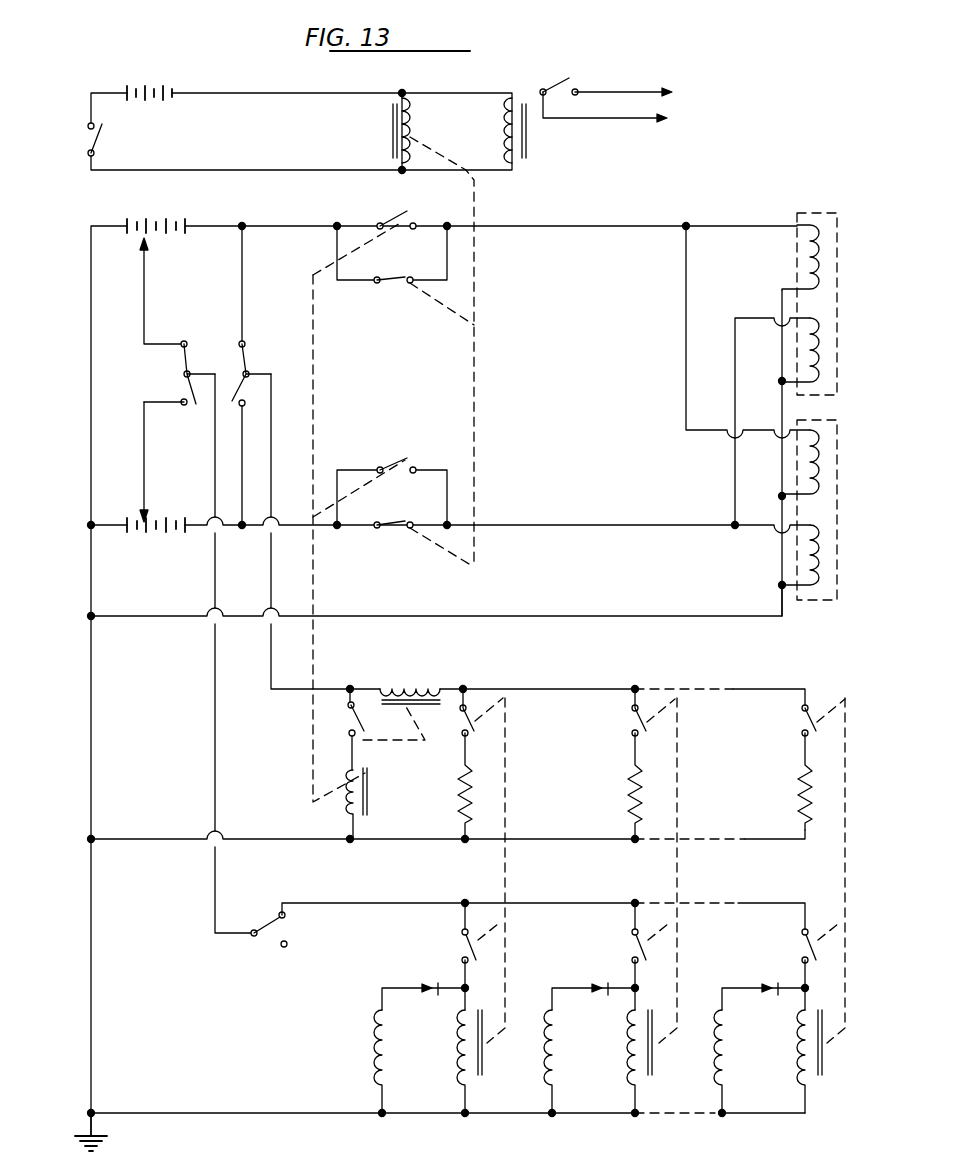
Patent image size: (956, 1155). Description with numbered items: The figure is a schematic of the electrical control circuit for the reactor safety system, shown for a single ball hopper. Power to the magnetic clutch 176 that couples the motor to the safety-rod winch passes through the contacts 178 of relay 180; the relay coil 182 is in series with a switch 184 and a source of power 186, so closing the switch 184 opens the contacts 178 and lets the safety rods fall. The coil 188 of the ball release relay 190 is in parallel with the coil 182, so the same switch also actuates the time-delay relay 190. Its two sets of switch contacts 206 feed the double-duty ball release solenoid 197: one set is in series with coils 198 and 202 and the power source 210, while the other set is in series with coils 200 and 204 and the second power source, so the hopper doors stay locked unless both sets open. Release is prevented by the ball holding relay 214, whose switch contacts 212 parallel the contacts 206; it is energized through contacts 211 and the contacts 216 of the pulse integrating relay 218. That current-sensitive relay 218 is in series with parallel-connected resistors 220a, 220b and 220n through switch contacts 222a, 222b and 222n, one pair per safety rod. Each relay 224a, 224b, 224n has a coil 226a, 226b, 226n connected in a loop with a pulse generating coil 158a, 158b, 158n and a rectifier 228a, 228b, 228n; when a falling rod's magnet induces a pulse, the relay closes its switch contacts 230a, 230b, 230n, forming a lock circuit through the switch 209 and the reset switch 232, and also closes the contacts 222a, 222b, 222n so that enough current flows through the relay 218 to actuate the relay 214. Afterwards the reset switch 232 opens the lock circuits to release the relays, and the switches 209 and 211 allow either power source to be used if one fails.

The source of power 186 is at (148, 92).
The switch 184 is at (84, 141).
The coil of ball release relay 188 is at (410, 137).
The ball release relay 190 is at (391, 128).
The relay coil 182 is at (506, 130).
The relay 180 is at (530, 141).
The contacts 178 is at (575, 92).
The magnetic clutch 176 is at (687, 108).
The power source 210 is at (150, 226).
The switch 209 is at (212, 340).
The contacts 211 is at (247, 350).
The switch contacts 212 is at (382, 230).
The switch contacts 206 is at (394, 286).
The ball release solenoid 197 is at (830, 424).
The coil 198 is at (828, 252).
The coil 200 is at (830, 340).
The coil 202 is at (832, 448).
The coil 204 is at (832, 544).
The pulse integrating relay 218 is at (428, 691).
The contacts 216 is at (348, 720).
The ball holding relay 214 is at (369, 788).
The switch contacts 222a is at (483, 730).
The resistor 220a is at (456, 798).
The switch contacts 222b is at (622, 720).
The resistor 220b is at (628, 774).
The switch contacts 222n is at (800, 722).
The resistor 220n is at (798, 794).
The reset switch 232 is at (276, 932).
The switch contacts 230a is at (460, 952).
The rectifier 228a is at (436, 980).
The coil 226a is at (462, 1035).
The relay 224a is at (458, 1060).
The pulse generating coil 158a is at (376, 1066).
The switch contacts 230b is at (630, 952).
The rectifier 228b is at (606, 980).
The coil 226b is at (632, 1035).
The relay 224b is at (628, 1060).
The pulse generating coil 158b is at (546, 1066).
The switch contacts 230n is at (800, 952).
The rectifier 228n is at (776, 980).
The coil 226n is at (802, 1035).
The relay 224n is at (798, 1060).
The pulse generating coil 158n is at (716, 1066).